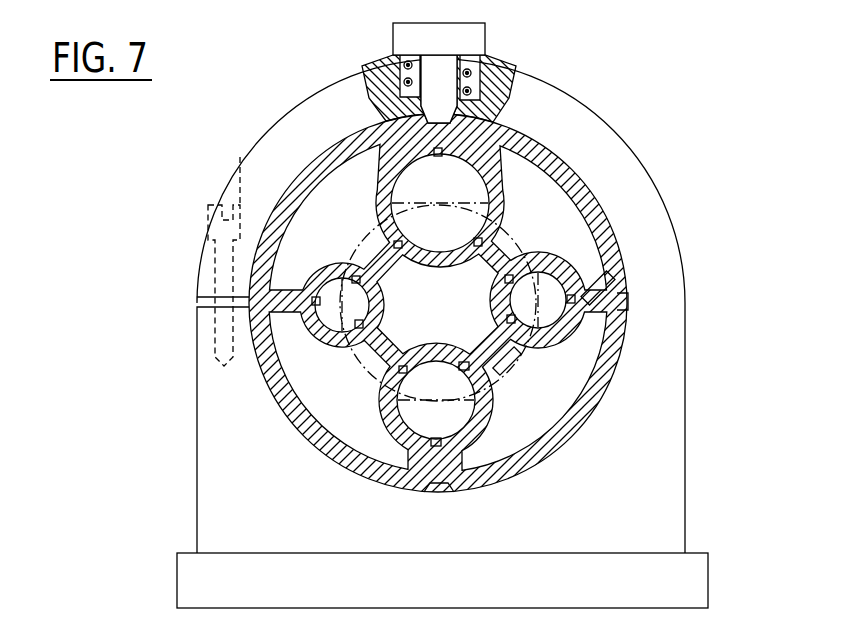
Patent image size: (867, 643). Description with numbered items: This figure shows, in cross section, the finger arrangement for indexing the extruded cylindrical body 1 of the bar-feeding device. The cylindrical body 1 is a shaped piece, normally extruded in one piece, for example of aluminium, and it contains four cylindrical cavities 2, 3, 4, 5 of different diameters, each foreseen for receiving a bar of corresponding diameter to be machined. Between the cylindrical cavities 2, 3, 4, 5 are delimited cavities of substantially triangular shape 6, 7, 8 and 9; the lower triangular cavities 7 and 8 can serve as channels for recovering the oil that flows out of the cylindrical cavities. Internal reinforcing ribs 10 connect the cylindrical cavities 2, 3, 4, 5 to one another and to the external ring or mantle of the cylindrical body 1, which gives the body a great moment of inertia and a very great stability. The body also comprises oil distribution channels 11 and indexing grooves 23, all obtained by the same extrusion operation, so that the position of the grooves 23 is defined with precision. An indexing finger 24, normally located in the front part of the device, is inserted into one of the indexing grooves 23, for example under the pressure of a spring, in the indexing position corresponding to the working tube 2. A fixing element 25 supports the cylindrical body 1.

The cylindrical body 1 is at (597, 200).
The cylindrical cavity 2 is at (455, 187).
The cylindrical cavity 3 is at (335, 308).
The cylindrical cavity 4 is at (420, 410).
The cylindrical cavity 5 is at (548, 288).
The triangular cavity 6 is at (333, 193).
The triangular cavity 7 is at (335, 405).
The triangular cavity 8 is at (540, 420).
The triangular cavity 9 is at (553, 200).
The internal reinforcing rib 10 is at (607, 262).
The oil distribution channel 11 is at (438, 152).
The indexing groove 23 is at (627, 305).
The indexing finger 24 is at (440, 73).
The fixing element 25 is at (665, 290).